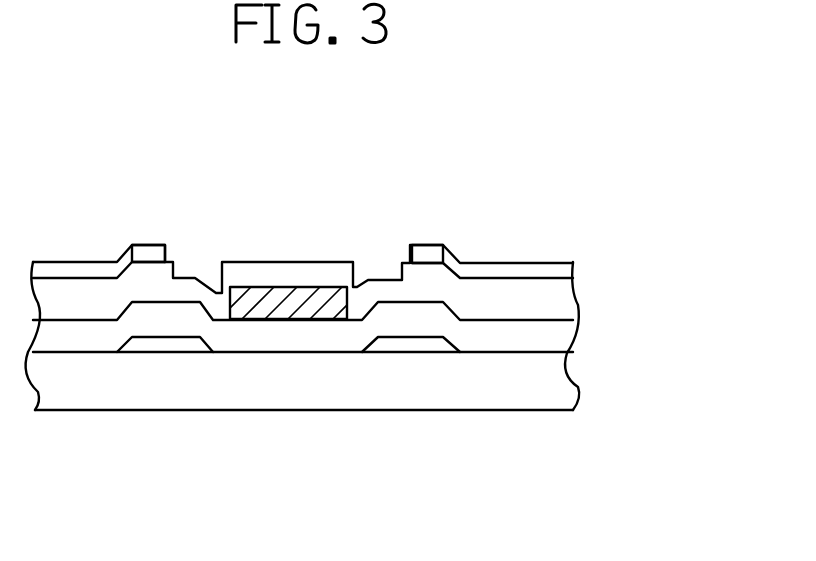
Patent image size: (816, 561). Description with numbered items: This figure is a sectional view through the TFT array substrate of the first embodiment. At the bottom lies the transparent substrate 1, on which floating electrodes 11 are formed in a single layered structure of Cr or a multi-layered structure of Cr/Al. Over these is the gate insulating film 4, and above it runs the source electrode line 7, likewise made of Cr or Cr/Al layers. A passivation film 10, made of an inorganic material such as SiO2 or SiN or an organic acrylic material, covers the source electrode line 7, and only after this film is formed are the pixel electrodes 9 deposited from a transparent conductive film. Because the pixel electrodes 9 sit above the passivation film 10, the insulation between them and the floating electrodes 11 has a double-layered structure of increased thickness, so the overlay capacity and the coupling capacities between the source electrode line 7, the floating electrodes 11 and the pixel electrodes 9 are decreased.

The transparent substrate 1 is at (82, 385).
The gate insulating film 4 is at (552, 337).
The source electrode line 7 is at (288, 302).
The pixel electrode 9 is at (152, 253).
The passivation film 10 is at (518, 305).
The floating electrode 11 is at (165, 345).